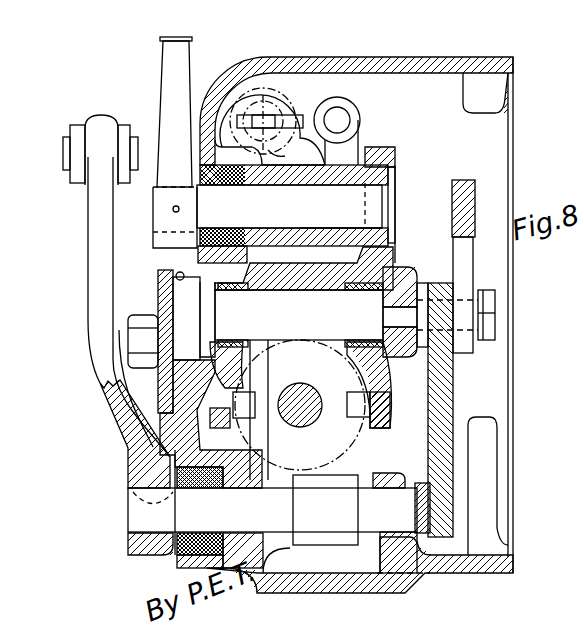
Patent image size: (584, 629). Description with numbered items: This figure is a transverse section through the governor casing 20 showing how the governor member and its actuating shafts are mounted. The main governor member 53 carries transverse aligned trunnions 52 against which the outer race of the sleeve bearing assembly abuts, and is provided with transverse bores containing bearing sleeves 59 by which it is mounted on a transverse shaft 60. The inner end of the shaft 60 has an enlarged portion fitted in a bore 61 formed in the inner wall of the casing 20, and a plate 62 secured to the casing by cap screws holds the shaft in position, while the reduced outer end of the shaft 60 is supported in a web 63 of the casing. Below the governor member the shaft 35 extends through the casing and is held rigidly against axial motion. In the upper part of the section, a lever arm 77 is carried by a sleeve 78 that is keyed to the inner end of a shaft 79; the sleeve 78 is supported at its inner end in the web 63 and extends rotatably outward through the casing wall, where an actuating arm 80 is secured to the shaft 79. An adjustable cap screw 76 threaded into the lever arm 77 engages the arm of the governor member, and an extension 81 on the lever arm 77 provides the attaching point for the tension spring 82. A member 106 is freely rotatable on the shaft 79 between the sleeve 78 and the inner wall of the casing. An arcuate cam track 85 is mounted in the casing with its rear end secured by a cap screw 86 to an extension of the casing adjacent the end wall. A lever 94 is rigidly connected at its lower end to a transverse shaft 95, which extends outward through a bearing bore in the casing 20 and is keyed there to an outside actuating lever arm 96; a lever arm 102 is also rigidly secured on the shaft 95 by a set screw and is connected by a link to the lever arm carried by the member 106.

The casing 20 is at (427, 55).
The shaft 35 is at (313, 423).
The trunnions 52 is at (348, 390).
The main governor member 53 is at (203, 392).
The bearing sleeves 59 is at (238, 340).
The transverse shaft 60 is at (321, 312).
The bore 61 is at (181, 272).
The plate 62 is at (165, 297).
The web 63 is at (377, 150).
The adjustable cap screw 76 is at (340, 121).
The lever arm 77 is at (335, 98).
The sleeve 78 is at (395, 172).
The shaft 79 is at (296, 205).
The actuating arm 80 is at (175, 66).
The extension 81 is at (295, 118).
The tension spring 82 is at (276, 156).
The arcuate cam track 85 is at (468, 181).
The cap screw 86 is at (490, 300).
The lever 94 is at (447, 422).
The transverse shaft 95 is at (229, 520).
The outside actuating lever arm 96 is at (106, 126).
The lever arm 102 is at (306, 520).
The member 106 is at (330, 228).